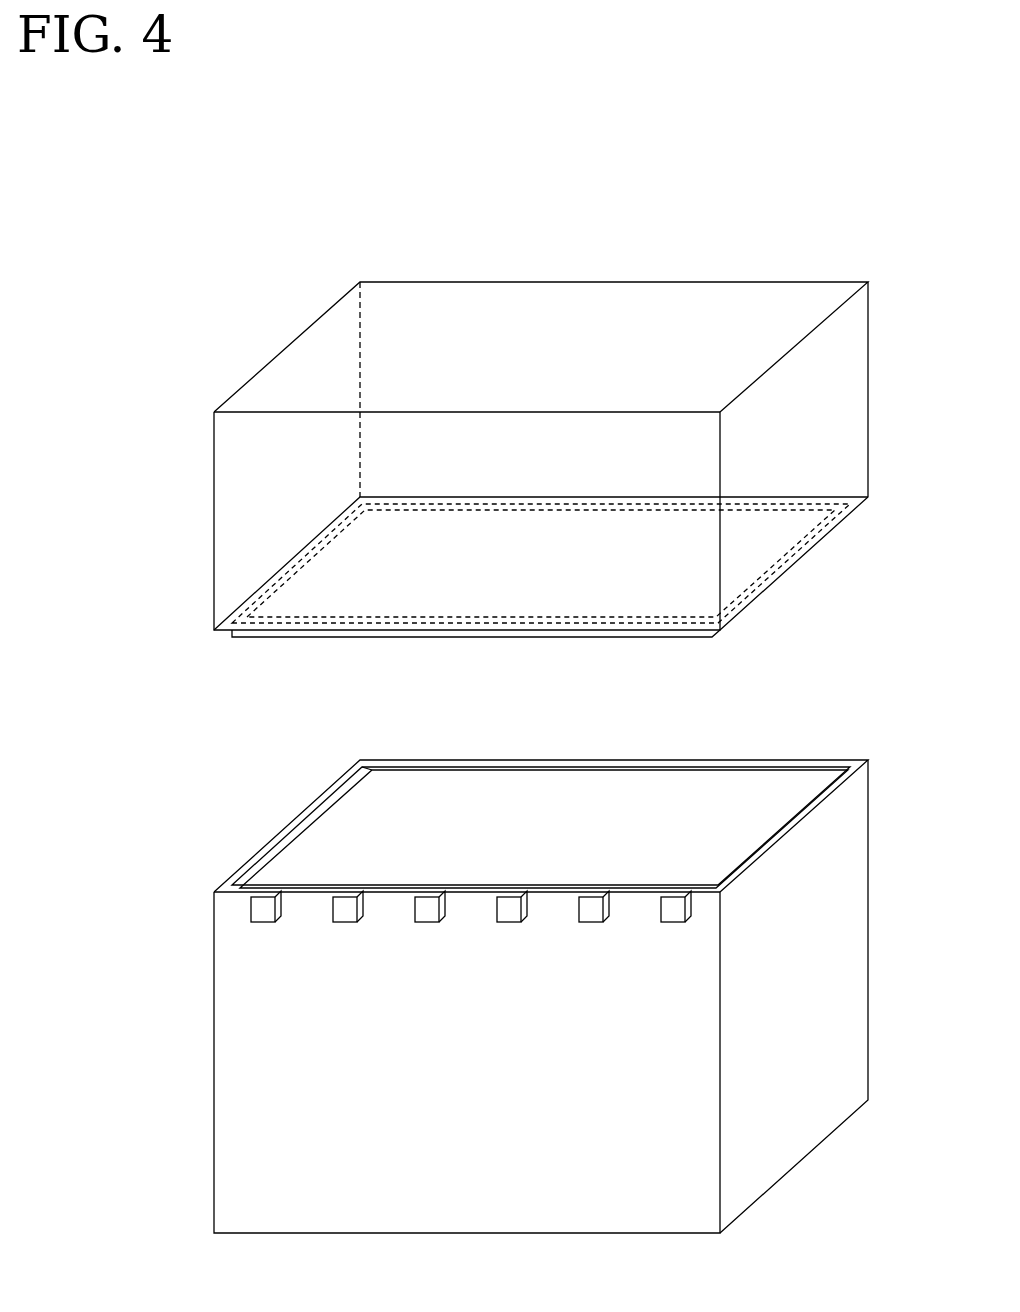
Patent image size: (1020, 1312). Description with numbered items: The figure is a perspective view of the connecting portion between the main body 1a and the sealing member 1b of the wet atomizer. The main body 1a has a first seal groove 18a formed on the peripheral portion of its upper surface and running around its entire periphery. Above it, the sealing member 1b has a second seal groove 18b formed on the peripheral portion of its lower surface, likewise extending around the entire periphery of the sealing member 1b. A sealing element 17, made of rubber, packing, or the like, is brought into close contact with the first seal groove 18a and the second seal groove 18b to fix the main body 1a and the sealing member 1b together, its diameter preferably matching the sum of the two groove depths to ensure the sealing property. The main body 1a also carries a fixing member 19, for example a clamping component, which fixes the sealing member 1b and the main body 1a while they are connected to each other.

The main body 1a is at (246, 1133).
The sealing member 1b is at (246, 512).
The sealing element 17 is at (677, 638).
The first seal groove 18a is at (837, 768).
The second seal groove 18b is at (800, 540).
The fixing member 19 is at (586, 922).